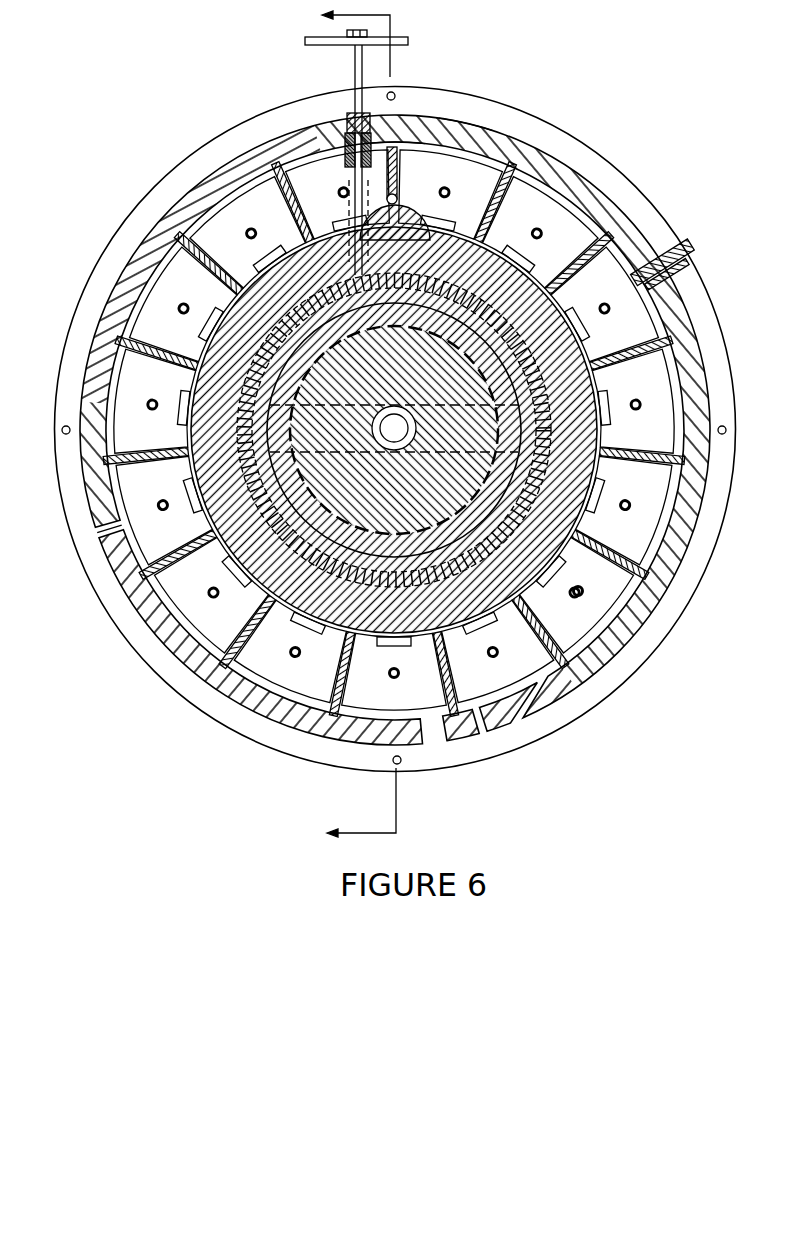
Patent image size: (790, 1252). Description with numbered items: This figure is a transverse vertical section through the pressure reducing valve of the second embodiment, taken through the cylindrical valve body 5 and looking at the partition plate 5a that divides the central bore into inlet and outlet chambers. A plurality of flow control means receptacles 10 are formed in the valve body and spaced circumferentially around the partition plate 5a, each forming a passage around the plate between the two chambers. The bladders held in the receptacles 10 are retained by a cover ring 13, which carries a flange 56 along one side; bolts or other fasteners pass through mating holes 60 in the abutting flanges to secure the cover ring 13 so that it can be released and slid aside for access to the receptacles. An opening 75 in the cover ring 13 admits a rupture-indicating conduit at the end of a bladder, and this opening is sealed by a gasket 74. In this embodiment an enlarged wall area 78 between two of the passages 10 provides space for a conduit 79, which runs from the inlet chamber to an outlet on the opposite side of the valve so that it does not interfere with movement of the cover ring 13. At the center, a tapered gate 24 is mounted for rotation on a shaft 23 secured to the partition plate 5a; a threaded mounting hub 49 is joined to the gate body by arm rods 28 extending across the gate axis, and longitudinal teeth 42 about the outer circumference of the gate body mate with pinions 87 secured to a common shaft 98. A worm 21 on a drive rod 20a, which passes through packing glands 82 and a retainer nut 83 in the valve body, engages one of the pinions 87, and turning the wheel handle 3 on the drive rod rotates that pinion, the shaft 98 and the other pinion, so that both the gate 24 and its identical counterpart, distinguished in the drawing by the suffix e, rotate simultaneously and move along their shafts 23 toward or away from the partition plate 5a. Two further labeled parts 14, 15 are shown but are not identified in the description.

The housing e is at (192, 172).
The flange 56 is at (252, 128).
The opening 75 is at (437, 720).
The cover ring 13 is at (547, 703).
The gasket 74 is at (108, 530).
The conduit 79 is at (468, 103).
The enlarged wall area 78 is at (388, 146).
The flow control means receptacles 10 is at (340, 645).
The pole piece 15 is at (582, 596).
The winding wire 14 is at (580, 598).
The teeth 42 is at (362, 327).
The cylindrical gate 24 is at (322, 326).
The partition plate 5a is at (383, 531).
The arm rods 28 is at (348, 440).
The threaded mounting hub 49 is at (386, 413).
The shaft 23 is at (409, 409).
The shaft 98 is at (412, 214).
The pinion 87 is at (396, 200).
The wheel handle 3 is at (369, 44).
The drive rod 20a is at (356, 80).
The retainer nut 83 is at (346, 116).
The worm gear 21 is at (357, 212).
The packing glands 82 is at (349, 184).
The mating holes 60 is at (392, 92).
The valve body 5 is at (350, 424).